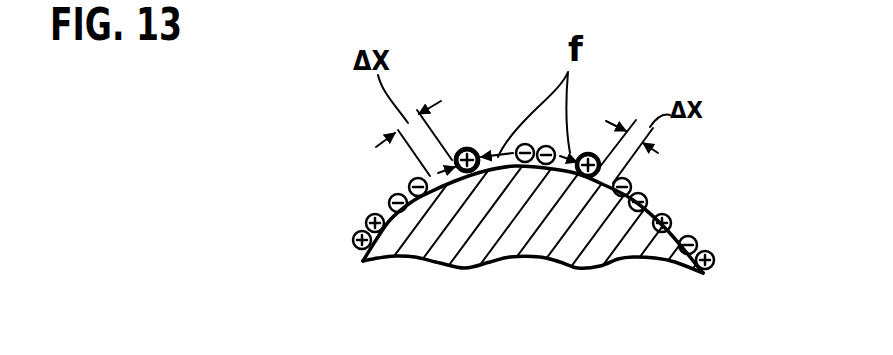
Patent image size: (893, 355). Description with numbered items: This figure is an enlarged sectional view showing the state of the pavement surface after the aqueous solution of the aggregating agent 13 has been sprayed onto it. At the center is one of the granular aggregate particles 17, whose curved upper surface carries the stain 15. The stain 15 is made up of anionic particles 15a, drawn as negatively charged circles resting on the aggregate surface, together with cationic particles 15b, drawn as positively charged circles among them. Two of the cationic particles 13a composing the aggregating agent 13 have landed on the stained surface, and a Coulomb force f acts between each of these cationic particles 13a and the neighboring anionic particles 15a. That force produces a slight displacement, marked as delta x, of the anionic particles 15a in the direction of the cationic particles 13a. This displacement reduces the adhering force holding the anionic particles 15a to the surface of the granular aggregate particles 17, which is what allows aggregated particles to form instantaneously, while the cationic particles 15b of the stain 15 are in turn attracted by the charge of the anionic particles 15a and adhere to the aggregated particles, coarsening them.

The aggregating agent 13 is at (465, 149).
The cationic particles 13a is at (471, 150).
The stain 15 is at (360, 217).
The anionic particles 15a is at (393, 214).
The cationic particles 15b is at (368, 258).
The granular aggregate particles 17 is at (613, 240).